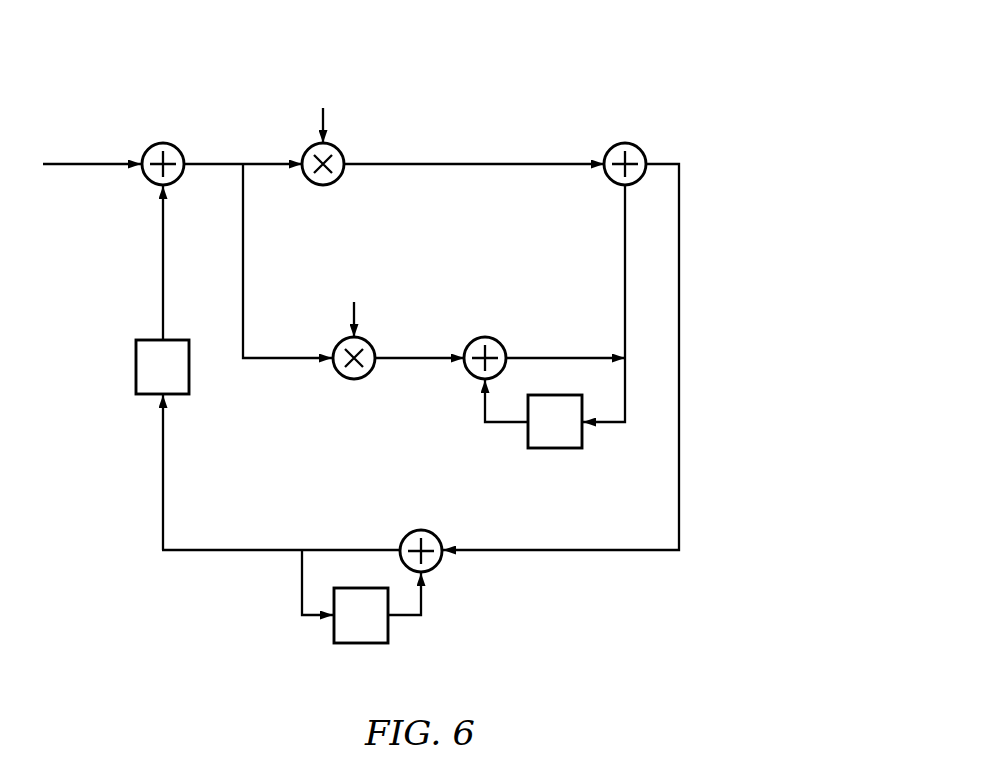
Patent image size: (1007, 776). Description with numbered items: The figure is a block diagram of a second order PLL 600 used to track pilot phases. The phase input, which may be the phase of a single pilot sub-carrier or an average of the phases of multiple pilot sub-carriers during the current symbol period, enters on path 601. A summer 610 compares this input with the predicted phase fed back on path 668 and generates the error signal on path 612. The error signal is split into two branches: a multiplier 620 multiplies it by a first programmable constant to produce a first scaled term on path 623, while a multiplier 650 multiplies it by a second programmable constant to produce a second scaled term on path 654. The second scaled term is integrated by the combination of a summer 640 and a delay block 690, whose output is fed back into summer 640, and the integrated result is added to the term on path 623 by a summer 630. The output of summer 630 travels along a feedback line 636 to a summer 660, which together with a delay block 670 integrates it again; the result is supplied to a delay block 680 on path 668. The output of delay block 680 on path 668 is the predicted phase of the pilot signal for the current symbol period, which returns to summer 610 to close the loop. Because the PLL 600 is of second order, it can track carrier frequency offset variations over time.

The second order PLL 600 is at (550, 58).
The path 601 is at (86, 168).
The summer 610 is at (153, 147).
The path 612 is at (229, 161).
The multiplier 620 is at (318, 186).
The path 623 is at (474, 162).
The summer 630 is at (636, 149).
The feedback signal 636 is at (563, 553).
The summer 640 is at (497, 341).
The multiplier 650 is at (343, 380).
The path 654 is at (419, 362).
The summer 660 is at (438, 568).
The path 668 is at (161, 263).
The delay block 670 is at (362, 645).
The delay block 680 is at (135, 367).
The delay block 690 is at (552, 450).